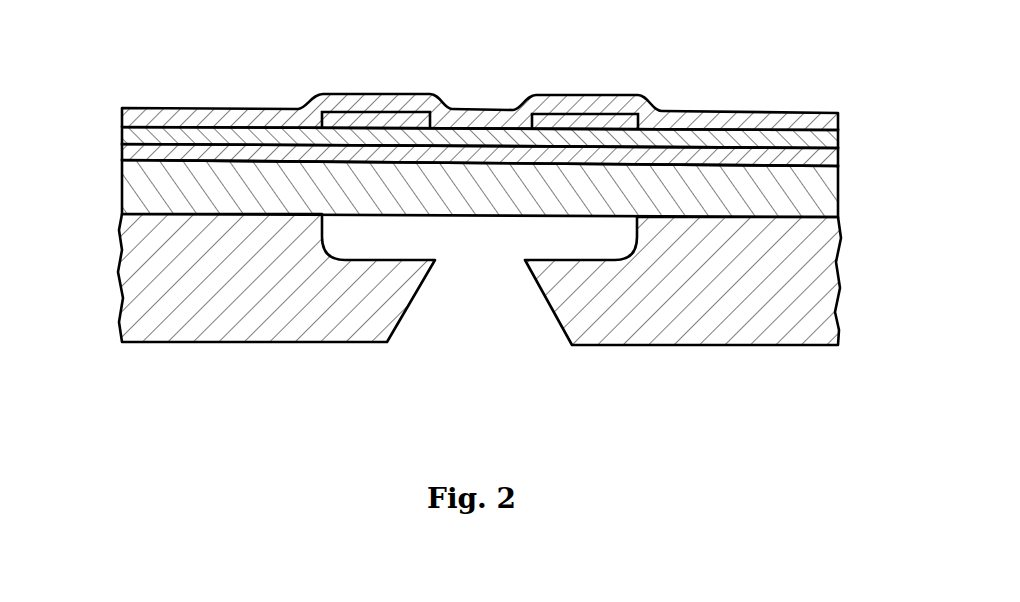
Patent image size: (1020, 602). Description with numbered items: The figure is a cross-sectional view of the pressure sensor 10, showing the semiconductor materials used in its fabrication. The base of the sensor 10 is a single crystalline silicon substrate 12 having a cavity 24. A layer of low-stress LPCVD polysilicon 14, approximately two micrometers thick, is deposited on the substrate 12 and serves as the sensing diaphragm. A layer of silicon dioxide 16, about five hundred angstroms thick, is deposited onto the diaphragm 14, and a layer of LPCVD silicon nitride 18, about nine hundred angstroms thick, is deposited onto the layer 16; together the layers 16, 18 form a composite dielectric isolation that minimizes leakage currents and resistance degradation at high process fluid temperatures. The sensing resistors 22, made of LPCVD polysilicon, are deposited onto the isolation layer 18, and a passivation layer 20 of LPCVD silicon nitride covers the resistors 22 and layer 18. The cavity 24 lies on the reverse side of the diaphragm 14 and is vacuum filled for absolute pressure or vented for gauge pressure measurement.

The pressure sensor 10 is at (112, 241).
The single crystalline silicon substrate 12 is at (820, 262).
The LPCVD polysilicon layer 14 is at (827, 185).
The silicon dioxide layer 16 is at (830, 157).
The LPCVD silicon nitride layer 18 is at (830, 138).
The passivation layer 20 is at (827, 112).
The sensing resistors 22 is at (385, 113).
The cavity 24 is at (480, 248).